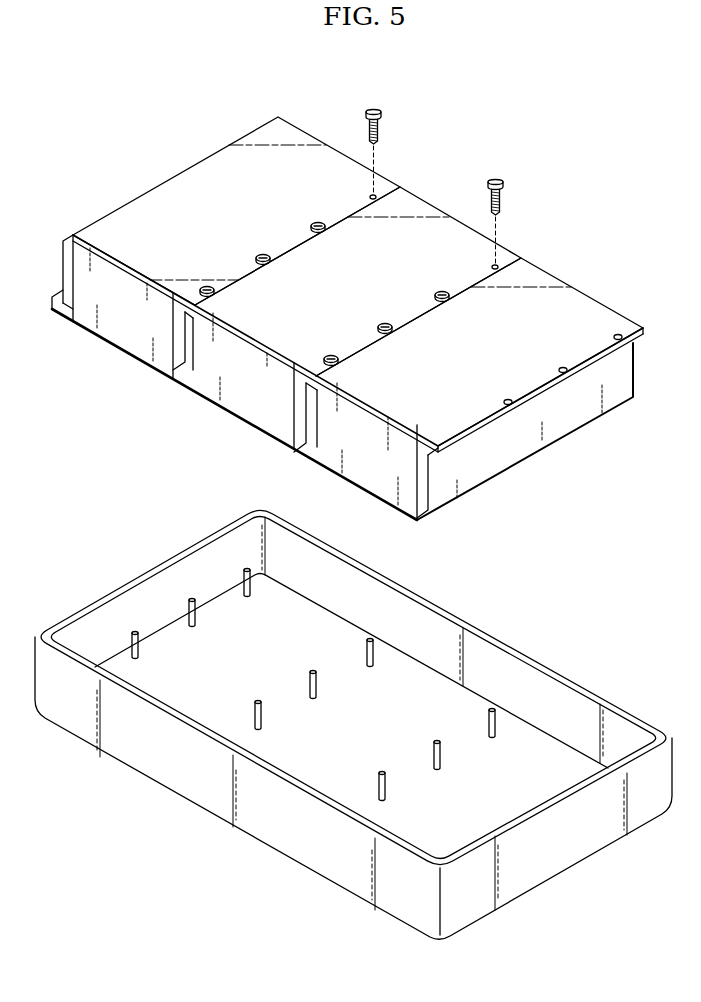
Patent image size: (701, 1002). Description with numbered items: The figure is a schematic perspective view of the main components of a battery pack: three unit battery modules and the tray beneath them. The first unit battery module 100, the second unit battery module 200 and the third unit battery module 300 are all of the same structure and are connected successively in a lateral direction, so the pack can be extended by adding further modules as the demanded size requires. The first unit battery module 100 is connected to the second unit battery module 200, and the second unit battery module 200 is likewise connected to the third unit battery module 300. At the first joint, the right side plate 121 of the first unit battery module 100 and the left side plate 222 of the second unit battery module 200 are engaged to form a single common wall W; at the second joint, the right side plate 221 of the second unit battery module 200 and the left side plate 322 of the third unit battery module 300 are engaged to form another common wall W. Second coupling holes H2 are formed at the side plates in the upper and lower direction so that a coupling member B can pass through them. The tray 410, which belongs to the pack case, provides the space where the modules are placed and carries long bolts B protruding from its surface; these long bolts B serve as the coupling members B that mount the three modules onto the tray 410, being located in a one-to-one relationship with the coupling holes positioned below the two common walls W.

The first unit battery module 100 is at (226, 240).
The second unit battery module 200 is at (352, 311).
The third unit battery module 300 is at (347, 371).
The right side plate 121 is at (177, 333).
The right side plate 221 is at (294, 403).
The left side plate 222 is at (193, 358).
The left side plate 322 is at (316, 430).
The common wall W is at (174, 371).
The coupling member B is at (376, 110).
The second coupling hole H2 is at (373, 196).
The tray 410 is at (103, 575).